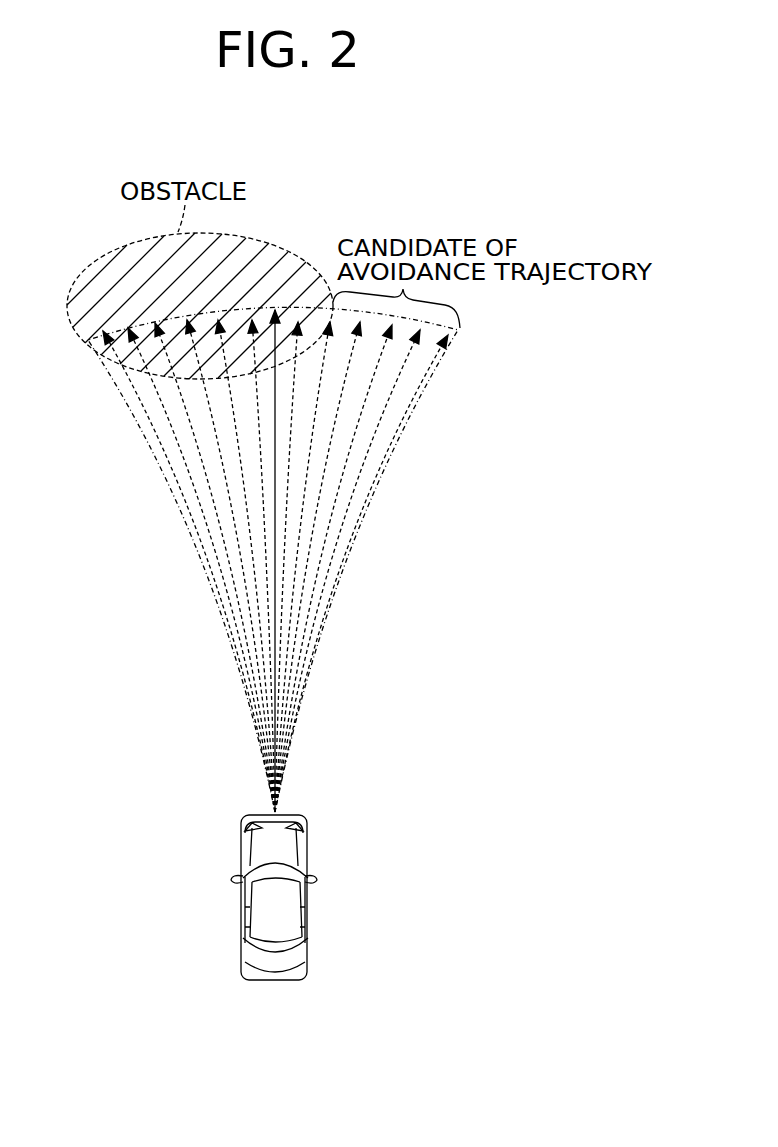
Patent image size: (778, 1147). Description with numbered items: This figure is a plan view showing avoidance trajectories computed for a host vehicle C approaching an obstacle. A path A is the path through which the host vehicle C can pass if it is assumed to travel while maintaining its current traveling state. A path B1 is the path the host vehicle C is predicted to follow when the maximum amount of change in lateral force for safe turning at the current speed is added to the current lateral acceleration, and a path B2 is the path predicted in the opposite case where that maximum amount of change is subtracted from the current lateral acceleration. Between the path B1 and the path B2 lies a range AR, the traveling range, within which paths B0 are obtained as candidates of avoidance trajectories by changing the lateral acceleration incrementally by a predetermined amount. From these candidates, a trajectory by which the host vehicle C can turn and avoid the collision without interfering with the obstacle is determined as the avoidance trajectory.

The path A is at (280, 335).
The paths B0 is at (180, 428).
The path B1 is at (432, 370).
The path B2 is at (130, 387).
The range AR is at (414, 420).
The host vehicle C is at (310, 912).